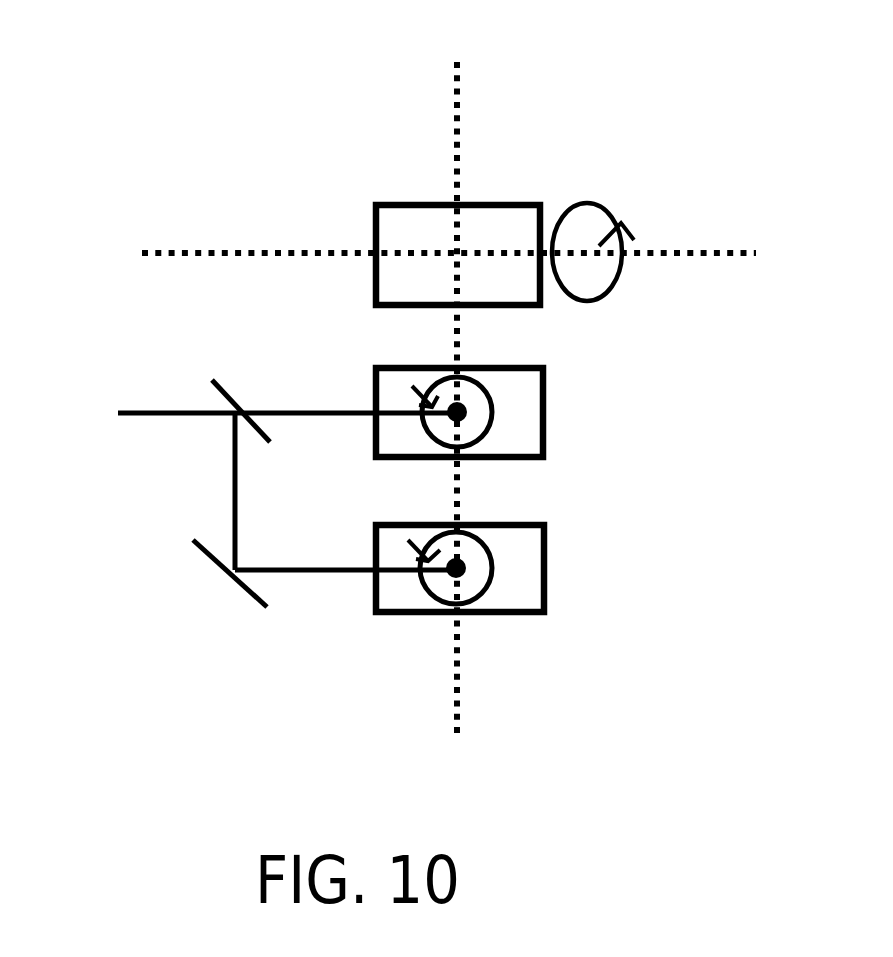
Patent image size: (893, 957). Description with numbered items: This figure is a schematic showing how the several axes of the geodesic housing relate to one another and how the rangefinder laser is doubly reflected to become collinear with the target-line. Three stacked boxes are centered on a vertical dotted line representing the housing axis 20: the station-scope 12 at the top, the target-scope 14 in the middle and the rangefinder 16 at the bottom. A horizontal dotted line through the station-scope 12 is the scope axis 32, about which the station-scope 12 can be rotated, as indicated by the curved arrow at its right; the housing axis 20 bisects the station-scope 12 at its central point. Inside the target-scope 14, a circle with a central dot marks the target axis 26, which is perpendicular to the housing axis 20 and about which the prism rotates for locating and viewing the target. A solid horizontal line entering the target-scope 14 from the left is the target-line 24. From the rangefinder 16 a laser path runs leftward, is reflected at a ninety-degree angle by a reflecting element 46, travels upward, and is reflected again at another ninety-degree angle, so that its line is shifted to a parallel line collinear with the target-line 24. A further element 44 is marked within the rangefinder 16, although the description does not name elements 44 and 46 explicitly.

The station-scope 12 is at (420, 219).
The target-scope 14 is at (416, 394).
The rangefinder 16 is at (415, 549).
The housing axis 20 is at (453, 367).
The target-line 24 is at (247, 473).
The target axis 26 is at (457, 412).
The scope axis 32 is at (402, 252).
The second light emitter 44 is at (456, 568).
The beam splitter 46 is at (207, 598).